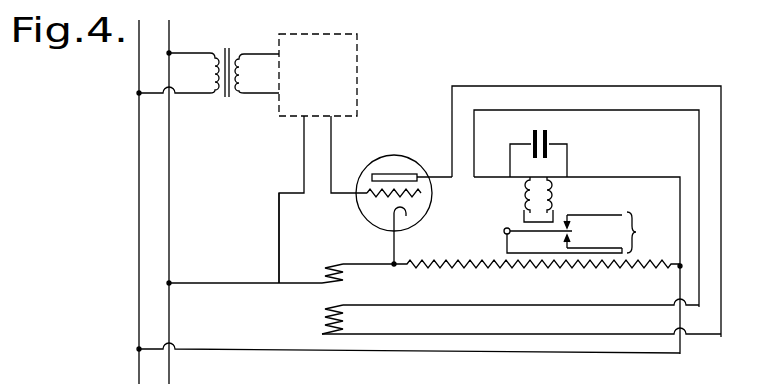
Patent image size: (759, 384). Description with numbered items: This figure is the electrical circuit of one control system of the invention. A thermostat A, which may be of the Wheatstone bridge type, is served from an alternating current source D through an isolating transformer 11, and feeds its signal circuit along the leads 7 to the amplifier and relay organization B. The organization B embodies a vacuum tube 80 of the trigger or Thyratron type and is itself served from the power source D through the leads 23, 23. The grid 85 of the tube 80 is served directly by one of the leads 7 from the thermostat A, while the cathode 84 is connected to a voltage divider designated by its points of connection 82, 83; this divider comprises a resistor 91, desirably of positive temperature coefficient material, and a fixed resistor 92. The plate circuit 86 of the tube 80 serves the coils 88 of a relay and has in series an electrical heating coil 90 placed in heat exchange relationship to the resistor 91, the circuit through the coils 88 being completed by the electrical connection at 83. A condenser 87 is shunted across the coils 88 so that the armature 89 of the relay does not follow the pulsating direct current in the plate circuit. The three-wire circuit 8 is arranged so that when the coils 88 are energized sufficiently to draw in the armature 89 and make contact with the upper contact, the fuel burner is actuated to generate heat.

The alternating current source D is at (132, 207).
The isolating transformer 11 is at (228, 50).
The thermostat A is at (357, 84).
The leads 7 is at (331, 140).
The vacuum tube 80 is at (393, 156).
The plate circuit 86 is at (418, 176).
The grid 85 is at (365, 196).
The cathode 84 is at (392, 214).
The amplifier and relay organization B is at (527, 79).
The condenser 87 is at (549, 135).
The coils 88 is at (518, 197).
The armature 89 is at (523, 233).
The three-wire circuit 8 is at (606, 232).
The fixed resistor 92 is at (488, 268).
The point of connection 83 is at (680, 267).
The resistor 91 is at (345, 274).
The electrical heating coil 90 is at (345, 316).
The leads 23 is at (210, 281).
The point of connection 82 is at (278, 285).